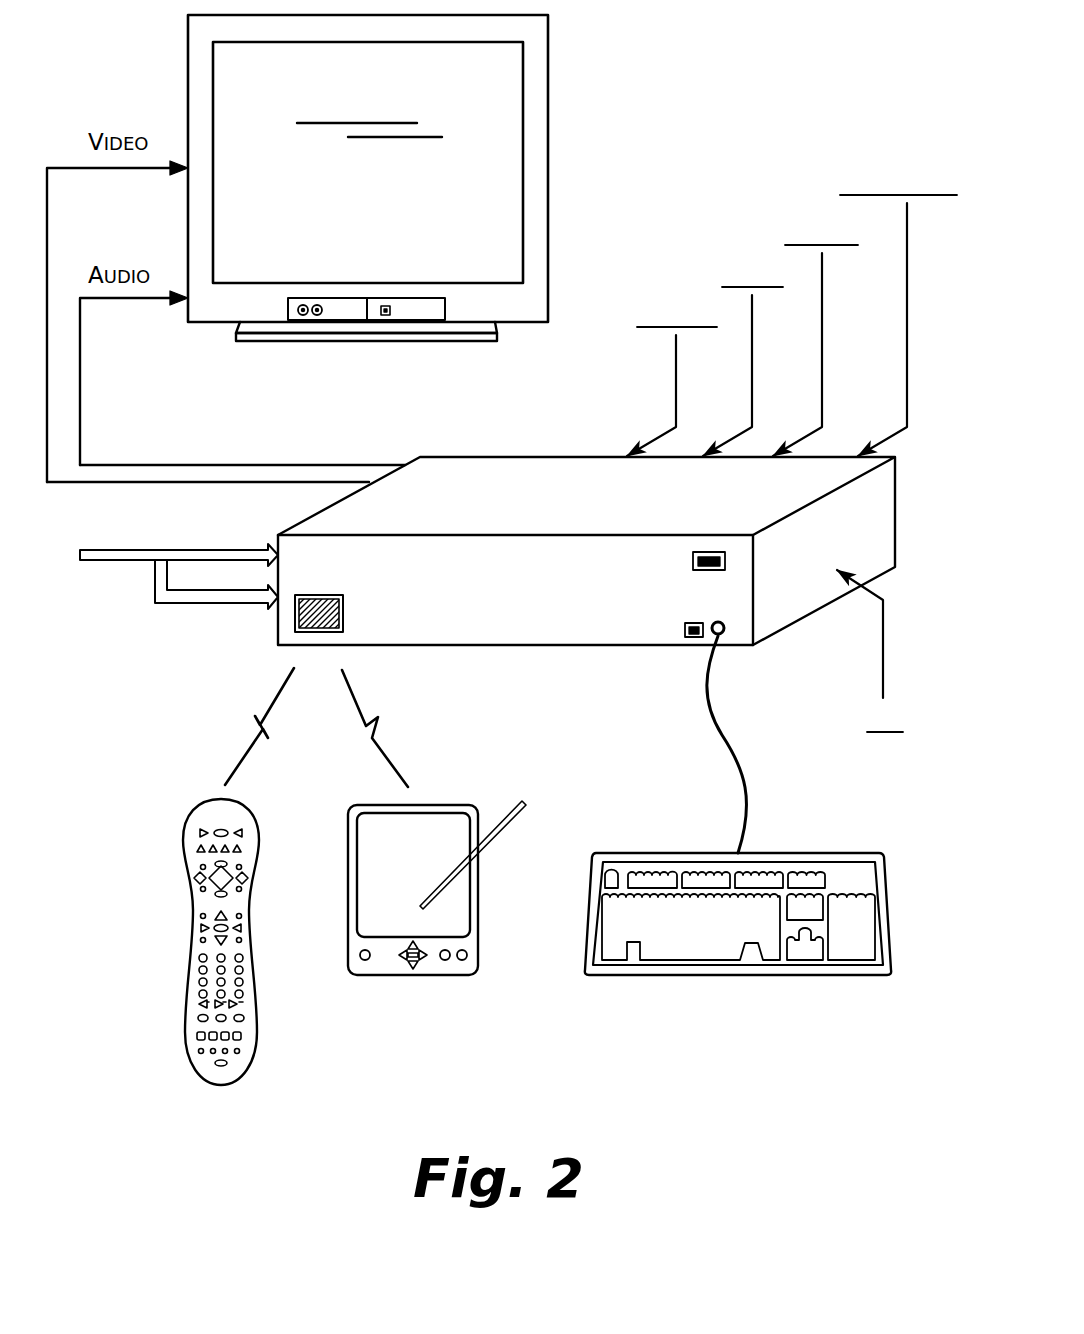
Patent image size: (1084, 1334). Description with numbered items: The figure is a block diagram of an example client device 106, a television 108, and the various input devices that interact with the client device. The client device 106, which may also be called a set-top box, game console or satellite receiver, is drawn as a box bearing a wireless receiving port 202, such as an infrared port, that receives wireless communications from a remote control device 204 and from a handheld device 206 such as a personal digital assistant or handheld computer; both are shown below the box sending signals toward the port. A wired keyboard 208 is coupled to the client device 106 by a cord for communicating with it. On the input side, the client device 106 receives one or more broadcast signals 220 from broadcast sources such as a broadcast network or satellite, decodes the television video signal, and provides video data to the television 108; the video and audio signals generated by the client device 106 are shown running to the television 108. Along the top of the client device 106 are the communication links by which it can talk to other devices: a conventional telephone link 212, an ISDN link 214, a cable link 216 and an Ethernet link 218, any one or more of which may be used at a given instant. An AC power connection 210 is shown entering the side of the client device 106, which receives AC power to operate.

The client device 106 is at (487, 457).
The television 108 is at (493, 271).
The wireless receiving port 202 is at (333, 595).
The remote control device 204 is at (187, 829).
The handheld device 206 is at (432, 805).
The wired keyboard 208 is at (788, 853).
The AC power connection 210 is at (883, 656).
The telephone link 212 is at (677, 285).
The ISDN link 214 is at (753, 247).
The cable link 216 is at (812, 208).
The Ethernet link 218 is at (890, 162).
The broadcast signal 220 is at (105, 560).